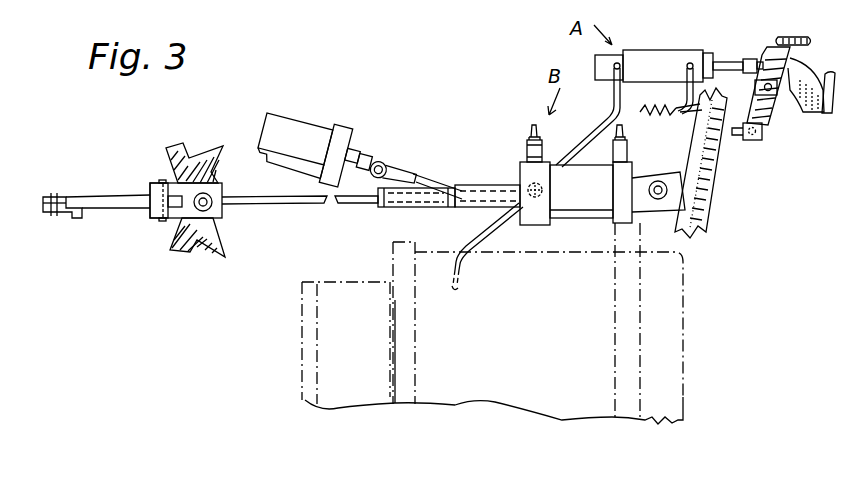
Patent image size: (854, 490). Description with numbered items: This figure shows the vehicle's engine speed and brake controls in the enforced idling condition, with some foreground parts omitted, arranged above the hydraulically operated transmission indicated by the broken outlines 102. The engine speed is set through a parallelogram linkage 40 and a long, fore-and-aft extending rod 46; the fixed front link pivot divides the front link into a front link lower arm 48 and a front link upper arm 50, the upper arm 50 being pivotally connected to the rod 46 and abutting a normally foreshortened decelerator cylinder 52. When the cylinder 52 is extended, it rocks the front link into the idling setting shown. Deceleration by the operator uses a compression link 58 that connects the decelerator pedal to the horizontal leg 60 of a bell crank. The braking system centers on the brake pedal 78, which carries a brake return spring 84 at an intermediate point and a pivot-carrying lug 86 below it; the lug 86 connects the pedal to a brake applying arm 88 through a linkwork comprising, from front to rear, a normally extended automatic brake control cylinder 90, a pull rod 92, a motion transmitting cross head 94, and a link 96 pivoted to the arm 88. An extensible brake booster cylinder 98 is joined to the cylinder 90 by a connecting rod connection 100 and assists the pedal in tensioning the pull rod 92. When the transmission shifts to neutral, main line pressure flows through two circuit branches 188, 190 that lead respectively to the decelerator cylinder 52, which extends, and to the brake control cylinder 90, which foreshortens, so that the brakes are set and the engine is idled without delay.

The parallelogram linkage 40 is at (745, 140).
The rod 46 is at (794, 38).
The front link lower arm 48 is at (770, 126).
The front link upper arm 50 is at (752, 47).
The decelerator cylinder 52 is at (658, 55).
The compression link 58 is at (806, 83).
The horizontal leg 60 is at (793, 115).
The brake pedal 78 is at (712, 212).
The brake return spring 84 is at (641, 115).
The pivot-carrying lug 86 is at (680, 180).
The brake applying arm 88 is at (42, 198).
The automatic brake control cylinder 90 is at (578, 214).
The pull rod 92 is at (246, 203).
The motion transmitting cross head 94 is at (180, 183).
The link 96 is at (108, 209).
The brake booster cylinder 98 is at (302, 130).
The connecting rod connection 100 is at (432, 176).
The transmission 102 is at (683, 397).
The circuit branch 188 is at (465, 240).
The circuit branch 190 is at (530, 130).